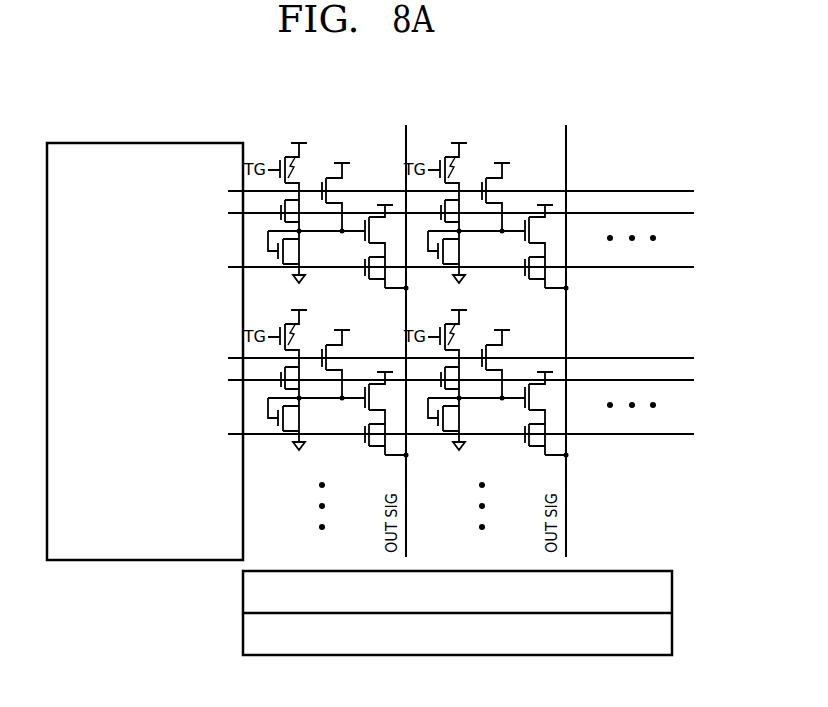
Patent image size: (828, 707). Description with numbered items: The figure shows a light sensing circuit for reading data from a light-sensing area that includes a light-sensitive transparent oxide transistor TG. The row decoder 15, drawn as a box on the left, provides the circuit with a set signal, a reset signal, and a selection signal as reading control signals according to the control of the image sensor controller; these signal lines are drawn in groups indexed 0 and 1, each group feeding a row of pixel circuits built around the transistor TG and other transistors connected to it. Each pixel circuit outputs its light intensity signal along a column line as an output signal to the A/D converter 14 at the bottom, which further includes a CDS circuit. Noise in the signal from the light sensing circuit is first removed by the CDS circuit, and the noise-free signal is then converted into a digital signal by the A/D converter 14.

The row decoder 15 is at (151, 146).
The A/D converter 14 is at (672, 612).
The pixel row 0 (RST SIG (0), SET SIG (0), SEL SIG (0) signal lines and pixels) 0 is at (401, 217).
The pixel row 1 (RST SIG (1), SET SIG (1), SEL SIG (1) signal lines and pixels) 1 is at (401, 384).